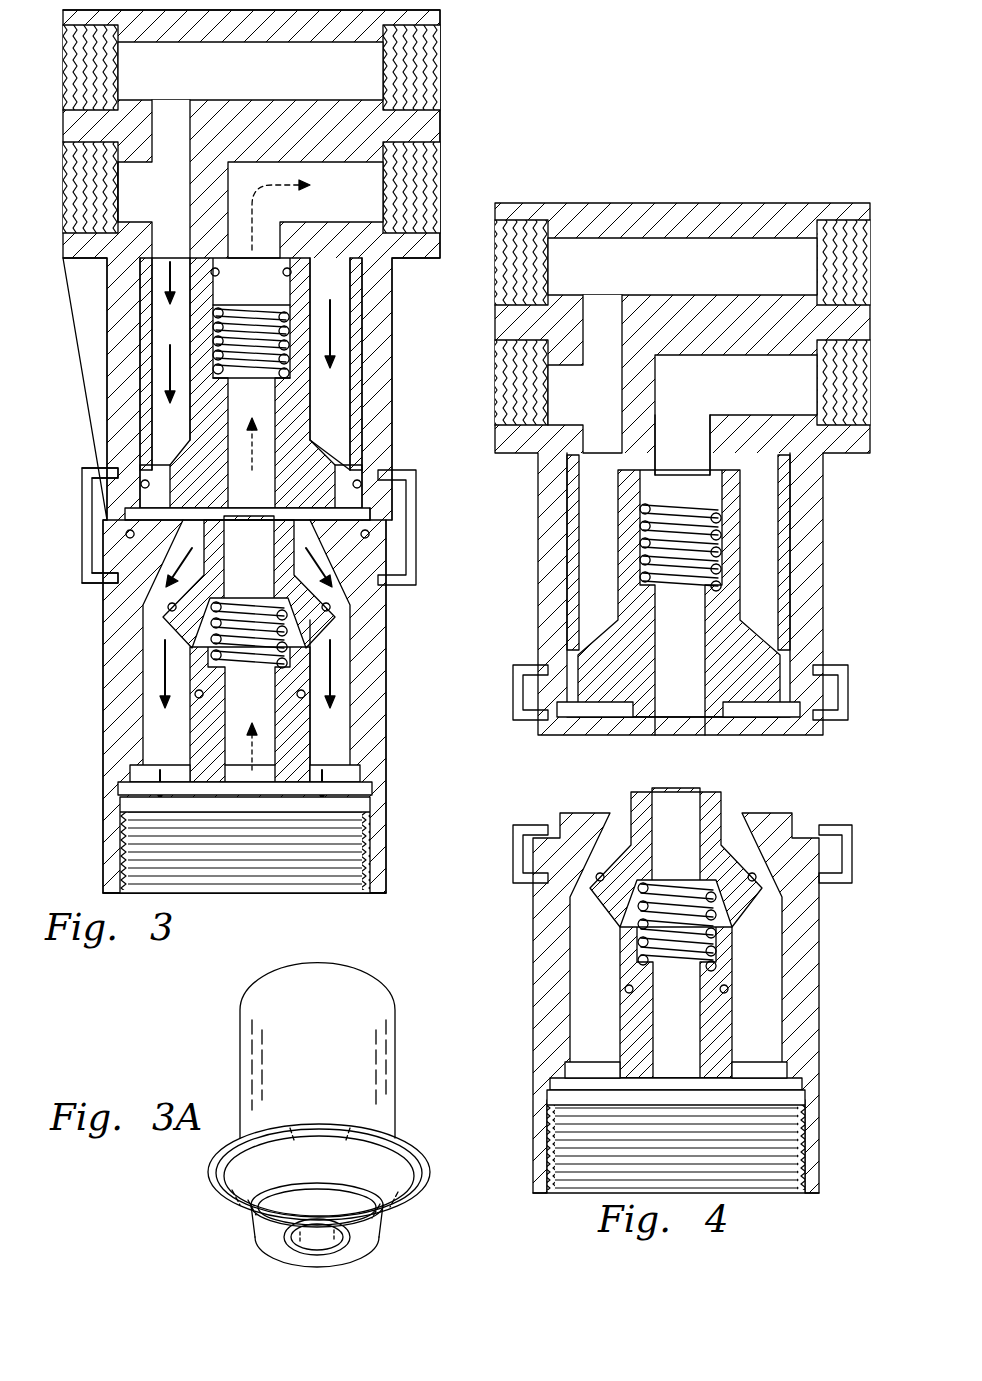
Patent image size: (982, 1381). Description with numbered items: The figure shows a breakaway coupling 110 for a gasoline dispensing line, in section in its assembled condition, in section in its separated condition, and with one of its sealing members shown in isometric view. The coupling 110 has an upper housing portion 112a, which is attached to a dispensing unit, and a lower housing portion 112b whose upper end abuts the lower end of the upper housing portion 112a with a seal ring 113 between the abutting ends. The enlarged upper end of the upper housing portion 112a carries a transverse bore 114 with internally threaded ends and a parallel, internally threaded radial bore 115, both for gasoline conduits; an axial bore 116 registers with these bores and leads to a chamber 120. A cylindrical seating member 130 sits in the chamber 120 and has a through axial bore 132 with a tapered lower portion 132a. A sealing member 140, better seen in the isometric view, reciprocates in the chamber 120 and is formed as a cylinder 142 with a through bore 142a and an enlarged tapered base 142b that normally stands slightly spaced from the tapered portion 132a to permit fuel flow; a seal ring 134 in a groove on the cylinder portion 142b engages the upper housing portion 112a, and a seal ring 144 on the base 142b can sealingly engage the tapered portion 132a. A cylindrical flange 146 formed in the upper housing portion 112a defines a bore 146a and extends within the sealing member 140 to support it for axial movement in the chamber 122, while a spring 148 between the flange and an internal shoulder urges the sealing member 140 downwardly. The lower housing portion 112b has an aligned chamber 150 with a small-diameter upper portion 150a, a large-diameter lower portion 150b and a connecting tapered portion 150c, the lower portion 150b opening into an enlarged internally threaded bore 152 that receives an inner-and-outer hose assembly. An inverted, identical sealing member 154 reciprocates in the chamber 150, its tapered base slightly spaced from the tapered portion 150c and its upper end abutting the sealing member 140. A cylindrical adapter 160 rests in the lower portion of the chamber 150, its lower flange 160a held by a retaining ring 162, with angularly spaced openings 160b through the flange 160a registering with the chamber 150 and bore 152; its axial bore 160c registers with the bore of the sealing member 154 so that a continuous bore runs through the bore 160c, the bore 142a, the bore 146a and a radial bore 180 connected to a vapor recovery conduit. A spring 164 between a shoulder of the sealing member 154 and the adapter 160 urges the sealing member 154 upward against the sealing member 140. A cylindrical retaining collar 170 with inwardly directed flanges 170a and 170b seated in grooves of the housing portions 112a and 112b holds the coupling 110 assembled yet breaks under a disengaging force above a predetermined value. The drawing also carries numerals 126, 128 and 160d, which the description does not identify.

In FIG. 3, the coupling 110 is at (454, 46).
In FIG. 3, the upper housing portion 112a is at (462, 165).
In FIG. 4, the upper housing portion 112a is at (706, 193).
In FIG. 3, the lower housing portion 112b is at (406, 820).
In FIG. 4, the lower housing portion 112b is at (519, 945).
In FIG. 3, the seal ring 113 is at (370, 518).
In FIG. 3, the transverse bore 114 is at (290, 82).
In FIG. 4, the transverse bore 114 is at (720, 277).
In FIG. 3, the radial bore 115 is at (136, 160).
In FIG. 3, the axial bore 116 is at (185, 112).
In FIG. 4, the axial bore 116 is at (612, 310).
In FIG. 3, the chamber 120 is at (160, 305).
In FIG. 3, the chamber 122 is at (342, 730).
In FIG. 4, the outlet passage 126 is at (784, 392).
In FIG. 4, the connecting passage 128 is at (696, 472).
In FIG. 3, the cylindrical seating member 130 is at (372, 356).
In FIG. 4, the cylindrical seating member 130 is at (801, 553).
In FIG. 3, the axial bore 132 is at (335, 342).
In FIG. 3, the tapered lower portion 132a is at (345, 440).
In FIG. 3, the seal ring 134 is at (362, 472).
In FIG. 3, the sealing member 140 is at (330, 400).
In FIG. 3A, the sealing member 140 is at (300, 1119).
In FIG. 4, the sealing member 140 is at (606, 580).
In FIG. 3A, the cylinder 142 is at (243, 1066).
In FIG. 3, the through bore 142a is at (272, 410).
In FIG. 3A, the through bore 142a is at (340, 1248).
In FIG. 4, the through bore 142a is at (690, 737).
In FIG. 3, the enlarged base 142b is at (128, 502).
In FIG. 3A, the enlarged base 142b is at (228, 1222).
In FIG. 3, the seal ring 144 is at (158, 418).
In FIG. 3A, the seal ring 144 is at (228, 1182).
In FIG. 3, the cylindrical flange 146 is at (290, 305).
In FIG. 4, the cylindrical flange 146 is at (720, 522).
In FIG. 3, the bore 146a is at (272, 280).
In FIG. 3, the spring 148 is at (215, 345).
In FIG. 3, the chamber 150 is at (350, 700).
In FIG. 4, the chamber 150 is at (765, 965).
In FIG. 3, the upper portion 150a is at (320, 540).
In FIG. 3, the lower portion 150b is at (340, 680).
In FIG. 3, the tapered portion 150c is at (330, 660).
In FIG. 3, the internally threaded bore 152 is at (355, 888).
In FIG. 4, the internally threaded bore 152 is at (785, 1190).
In FIG. 3, the sealing member 154 is at (150, 650).
In FIG. 3, the cylindrical adapter 160 is at (292, 782).
In FIG. 4, the cylindrical adapter 160 is at (718, 1052).
In FIG. 3, the flange 160a is at (130, 762).
In FIG. 3, the openings 160b is at (160, 762).
In FIG. 3, the axially-extending bore 160c is at (272, 702).
In FIG. 3, the valve bottom 160d is at (228, 782).
In FIG. 3, the retaining ring 162 is at (372, 790).
In FIG. 3, the spring 164 is at (255, 593).
In FIG. 4, the spring 164 is at (678, 868).
In FIG. 3, the cylindrical retaining collar 170 is at (412, 488).
In FIG. 4, the cylindrical retaining collar 170 is at (505, 678).
In FIG. 3, the inwardly-directed flange 170a is at (88, 468).
In FIG. 3, the inwardly-directed flange 170b is at (95, 585).
In FIG. 3, the radial bore 180 is at (357, 204).